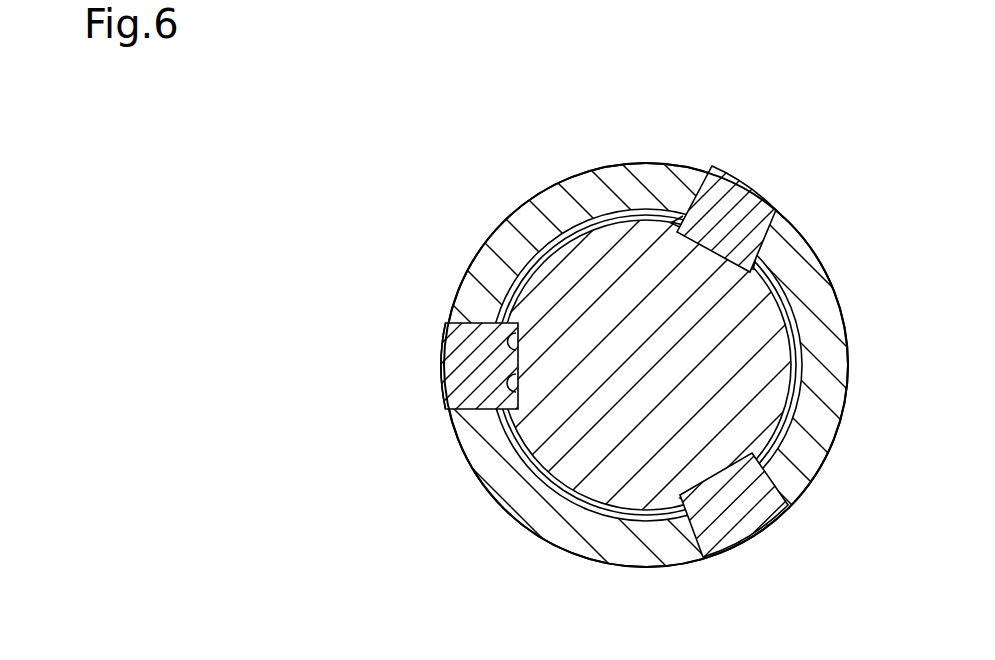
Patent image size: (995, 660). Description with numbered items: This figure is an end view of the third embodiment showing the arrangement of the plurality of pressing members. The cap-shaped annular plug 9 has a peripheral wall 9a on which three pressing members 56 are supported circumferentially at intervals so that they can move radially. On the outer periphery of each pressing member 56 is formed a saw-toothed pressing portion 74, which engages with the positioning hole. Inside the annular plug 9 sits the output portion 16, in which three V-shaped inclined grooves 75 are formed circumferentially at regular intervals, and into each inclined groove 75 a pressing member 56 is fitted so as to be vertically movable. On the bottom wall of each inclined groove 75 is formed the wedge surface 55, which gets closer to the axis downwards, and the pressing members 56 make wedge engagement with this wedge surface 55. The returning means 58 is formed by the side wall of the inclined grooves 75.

The annular plug 9 is at (817, 247).
The peripheral wall 9a is at (822, 300).
The output portion 16 is at (767, 405).
The pressing member 56 is at (757, 181).
The returning means 58 is at (491, 472).
The saw-toothed pressing portion 74 is at (438, 394).
The inclined groove 75 is at (516, 352).
The wedge surface 55 is at (523, 393).